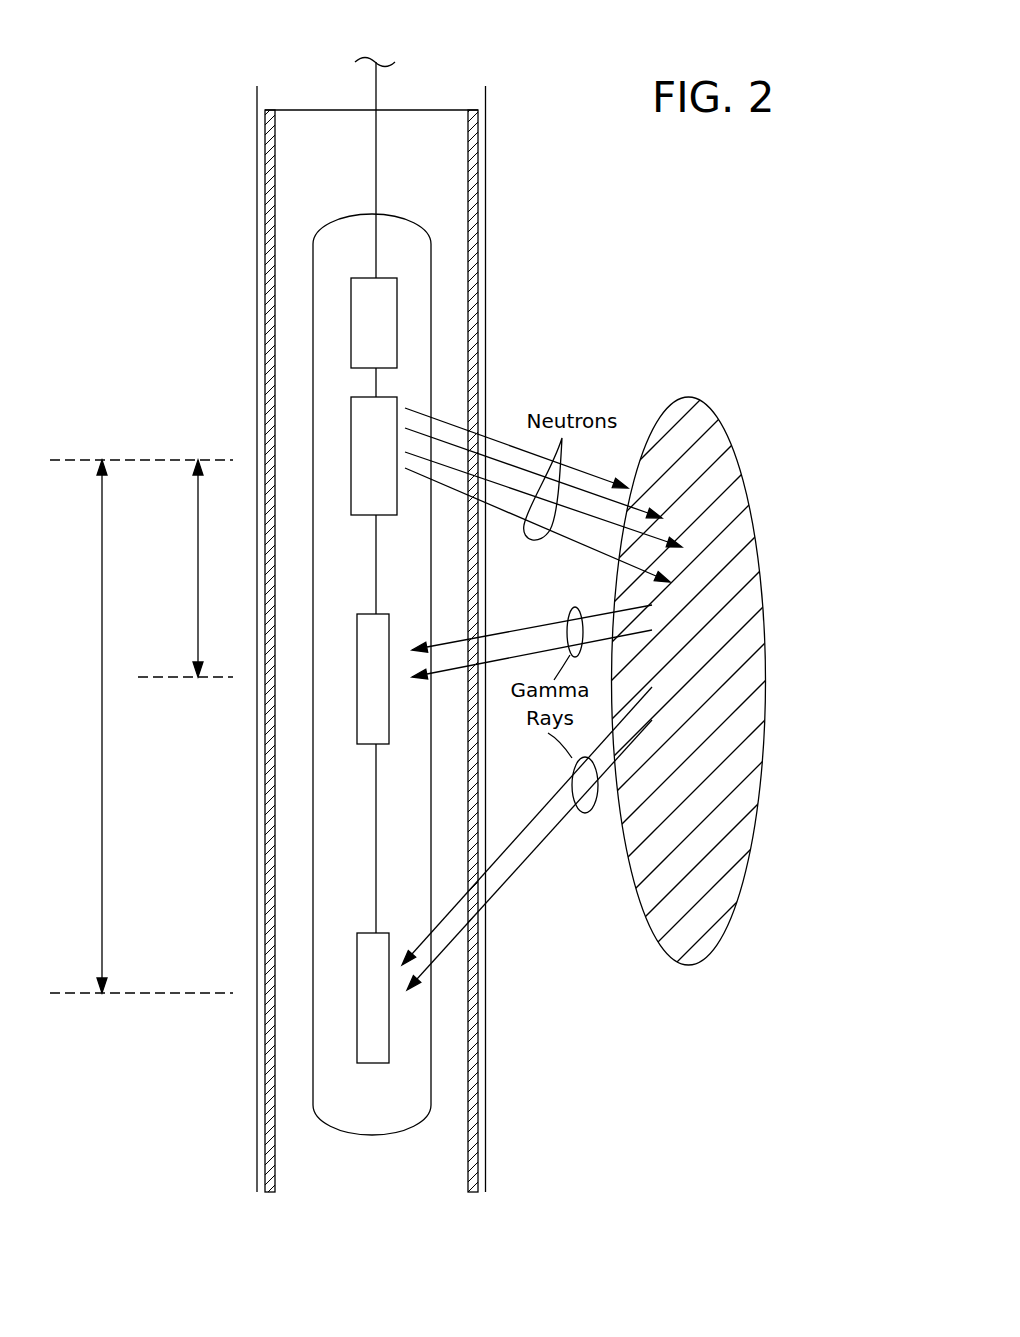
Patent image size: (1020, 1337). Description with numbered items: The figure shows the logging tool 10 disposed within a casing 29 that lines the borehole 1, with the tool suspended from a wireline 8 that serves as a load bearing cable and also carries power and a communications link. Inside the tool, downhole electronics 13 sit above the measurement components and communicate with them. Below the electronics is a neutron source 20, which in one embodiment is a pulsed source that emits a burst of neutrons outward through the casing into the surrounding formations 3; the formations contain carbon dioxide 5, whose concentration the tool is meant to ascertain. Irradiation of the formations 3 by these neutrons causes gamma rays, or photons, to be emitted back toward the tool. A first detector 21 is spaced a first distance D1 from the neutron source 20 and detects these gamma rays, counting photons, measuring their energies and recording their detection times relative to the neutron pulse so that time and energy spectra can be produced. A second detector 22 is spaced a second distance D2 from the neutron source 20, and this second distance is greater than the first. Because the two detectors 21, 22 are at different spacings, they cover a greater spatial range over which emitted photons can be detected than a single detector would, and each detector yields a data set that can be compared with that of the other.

The wellbore 1 is at (257, 100).
The casing 29 is at (272, 110).
The wireline 8 is at (377, 87).
The logging instrument 10 is at (323, 228).
The downhole electronics 13 is at (387, 327).
The neutron source 20 is at (387, 467).
The first detector 21 is at (357, 625).
The second detector 22 is at (357, 930).
The formations 3 is at (782, 247).
The carbon dioxide 5 is at (728, 442).
The first distance D1 is at (185, 568).
The second distance D2 is at (141, 726).